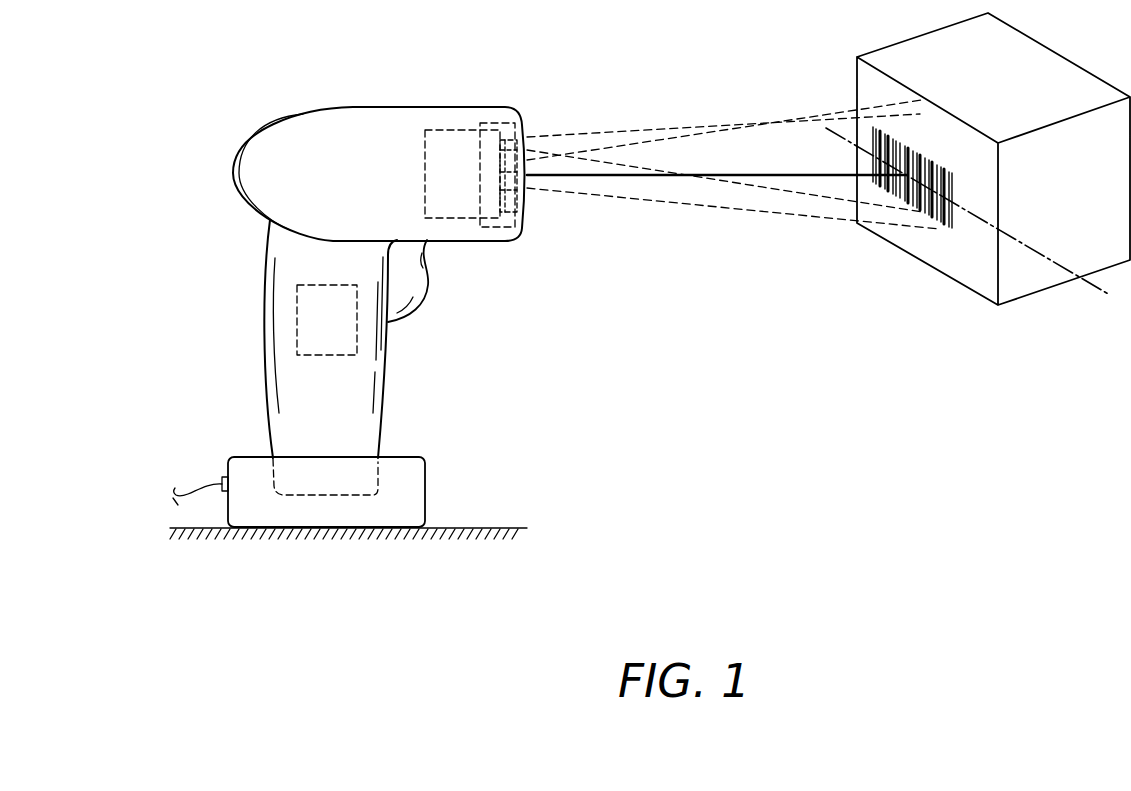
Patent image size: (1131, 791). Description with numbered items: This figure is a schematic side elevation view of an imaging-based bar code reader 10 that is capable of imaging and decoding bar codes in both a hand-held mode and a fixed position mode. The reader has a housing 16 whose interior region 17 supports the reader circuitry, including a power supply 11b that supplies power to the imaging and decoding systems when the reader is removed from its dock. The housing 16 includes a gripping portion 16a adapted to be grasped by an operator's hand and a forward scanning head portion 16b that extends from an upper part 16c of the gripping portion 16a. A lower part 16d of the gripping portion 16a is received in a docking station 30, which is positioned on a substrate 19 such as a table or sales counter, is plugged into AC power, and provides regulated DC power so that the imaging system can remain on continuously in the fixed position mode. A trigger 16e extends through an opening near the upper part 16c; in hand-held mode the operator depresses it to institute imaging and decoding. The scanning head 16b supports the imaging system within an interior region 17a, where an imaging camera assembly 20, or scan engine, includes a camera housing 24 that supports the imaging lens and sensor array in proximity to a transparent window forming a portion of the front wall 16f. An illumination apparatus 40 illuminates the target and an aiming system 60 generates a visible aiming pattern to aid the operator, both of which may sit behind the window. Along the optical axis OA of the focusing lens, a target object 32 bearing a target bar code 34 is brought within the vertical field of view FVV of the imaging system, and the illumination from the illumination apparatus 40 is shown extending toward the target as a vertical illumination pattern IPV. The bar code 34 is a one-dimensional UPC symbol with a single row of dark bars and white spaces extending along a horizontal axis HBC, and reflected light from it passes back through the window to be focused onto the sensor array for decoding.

The imaging-based bar code reader 10 is at (296, 68).
The housing 16 is at (238, 253).
The gripping portion 16a is at (267, 392).
The scanning head portion 16b is at (380, 106).
The upper part of gripping portion 16c is at (347, 250).
The lower part of gripping portion 16d is at (371, 474).
The trigger 16e is at (413, 293).
The front wall of scanning head 16f is at (533, 93).
The interior region of housing 17 is at (293, 282).
The interior region of scanning head 17a is at (433, 120).
The imaging camera assembly 20 is at (428, 142).
The camera housing 24 is at (497, 175).
The illumination apparatus 40 is at (490, 143).
The aiming system 60 is at (492, 203).
The power supply 11b is at (325, 348).
The docking station 30 is at (405, 458).
The support surface / countertop 19 is at (508, 528).
The target object 32 is at (973, 296).
The target bar code 34 is at (910, 210).
The optical axis OA is at (647, 177).
The vertical field of view FVV is at (700, 203).
The illumination pattern (vertical) IPV is at (790, 125).
The horizontal axis of bar code HBC is at (1093, 286).